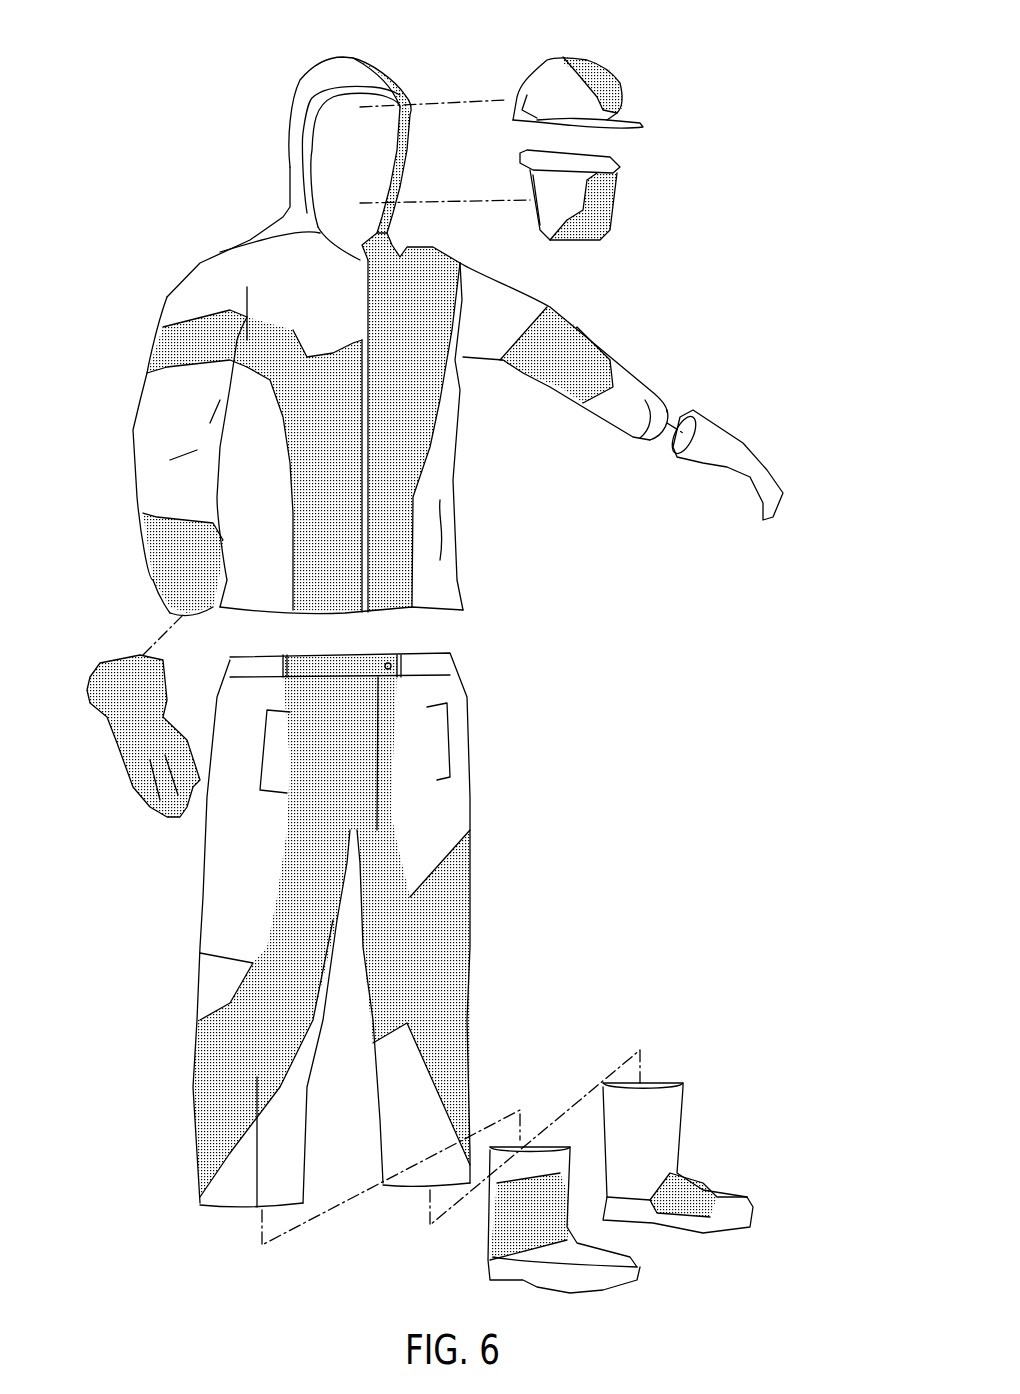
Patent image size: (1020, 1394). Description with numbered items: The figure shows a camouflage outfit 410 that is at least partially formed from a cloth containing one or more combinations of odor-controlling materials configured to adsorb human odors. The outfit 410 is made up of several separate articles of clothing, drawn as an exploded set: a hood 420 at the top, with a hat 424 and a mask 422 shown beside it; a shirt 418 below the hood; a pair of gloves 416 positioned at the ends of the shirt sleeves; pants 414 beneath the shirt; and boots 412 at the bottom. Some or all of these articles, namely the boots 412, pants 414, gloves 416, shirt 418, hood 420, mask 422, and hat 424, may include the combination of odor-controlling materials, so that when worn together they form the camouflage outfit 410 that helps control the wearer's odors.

The camouflage outfit 410 is at (760, 210).
The boots 412 is at (637, 1267).
The pants 414 is at (447, 828).
The gloves 416 is at (130, 760).
The shirt 418 is at (440, 532).
The hood 420 is at (318, 77).
The mask 422 is at (607, 223).
The hat 424 is at (623, 67).